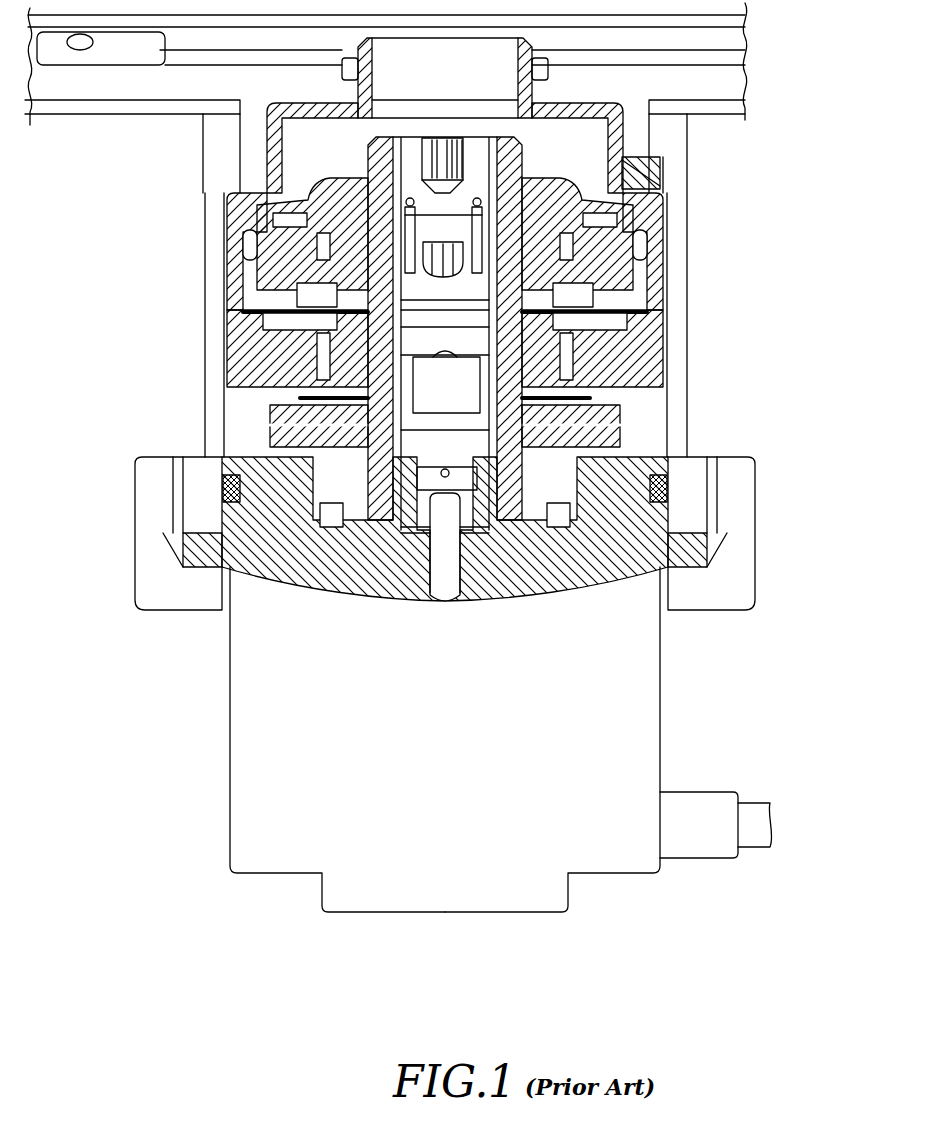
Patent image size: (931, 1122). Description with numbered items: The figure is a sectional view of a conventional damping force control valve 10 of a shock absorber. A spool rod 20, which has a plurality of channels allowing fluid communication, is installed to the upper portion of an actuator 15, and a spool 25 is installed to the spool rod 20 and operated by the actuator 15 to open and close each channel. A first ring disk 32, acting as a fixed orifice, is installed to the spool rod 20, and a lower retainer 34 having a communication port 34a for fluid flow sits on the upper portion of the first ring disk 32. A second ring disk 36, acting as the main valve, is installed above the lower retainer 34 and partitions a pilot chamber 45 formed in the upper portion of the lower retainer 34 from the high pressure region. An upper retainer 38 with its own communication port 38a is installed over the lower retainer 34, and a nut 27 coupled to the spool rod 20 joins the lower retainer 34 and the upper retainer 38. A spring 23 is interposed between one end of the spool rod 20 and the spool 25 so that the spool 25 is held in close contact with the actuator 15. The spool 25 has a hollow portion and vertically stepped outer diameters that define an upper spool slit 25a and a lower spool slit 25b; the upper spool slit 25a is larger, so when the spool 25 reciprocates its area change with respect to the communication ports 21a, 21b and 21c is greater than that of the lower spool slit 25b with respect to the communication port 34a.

The damping force control valve 10 is at (773, 428).
The actuator 15 is at (644, 709).
The spool rod 20 is at (610, 358).
The communication port 21a is at (347, 400).
The communication port 21b is at (327, 338).
The communication port 21c is at (380, 280).
The spring 23 is at (600, 236).
The spool 25 is at (594, 300).
The upper spool slit 25a is at (600, 270).
The lower spool slit 25b is at (600, 390).
The nut 27 is at (580, 187).
The first ring disk 32 is at (365, 398).
The lower retainer 34 is at (243, 373).
The communication port 34a is at (285, 402).
The second ring disk 36 is at (296, 294).
The upper retainer 38 is at (258, 185).
The communication port 38a is at (228, 207).
The pilot chamber 45 is at (617, 318).